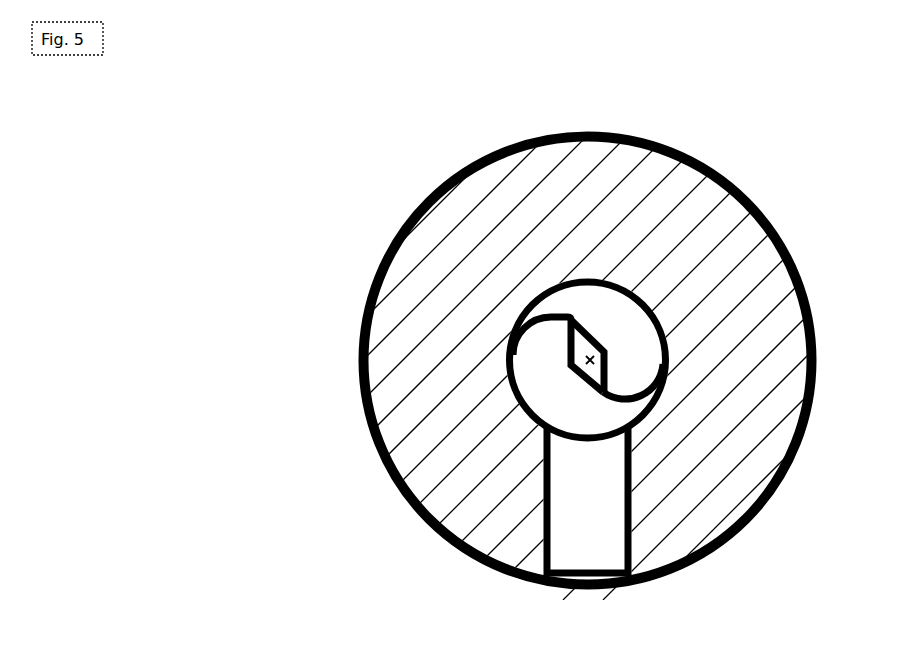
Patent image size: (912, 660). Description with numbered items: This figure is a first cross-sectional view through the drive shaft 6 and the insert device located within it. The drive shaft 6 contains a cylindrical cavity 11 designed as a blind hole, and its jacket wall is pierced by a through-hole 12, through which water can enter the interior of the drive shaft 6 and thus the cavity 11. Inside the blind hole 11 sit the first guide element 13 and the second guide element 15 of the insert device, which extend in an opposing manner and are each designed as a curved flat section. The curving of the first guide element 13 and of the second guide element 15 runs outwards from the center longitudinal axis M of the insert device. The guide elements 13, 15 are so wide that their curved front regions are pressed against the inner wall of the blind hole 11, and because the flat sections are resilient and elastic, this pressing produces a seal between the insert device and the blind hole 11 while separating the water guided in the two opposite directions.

The drive shaft 6 is at (400, 262).
The cavity 11 is at (592, 310).
The through-hole 12 is at (572, 530).
The first guide element 13 is at (537, 316).
The second guide element 15 is at (627, 402).
The center longitudinal axis M is at (602, 357).